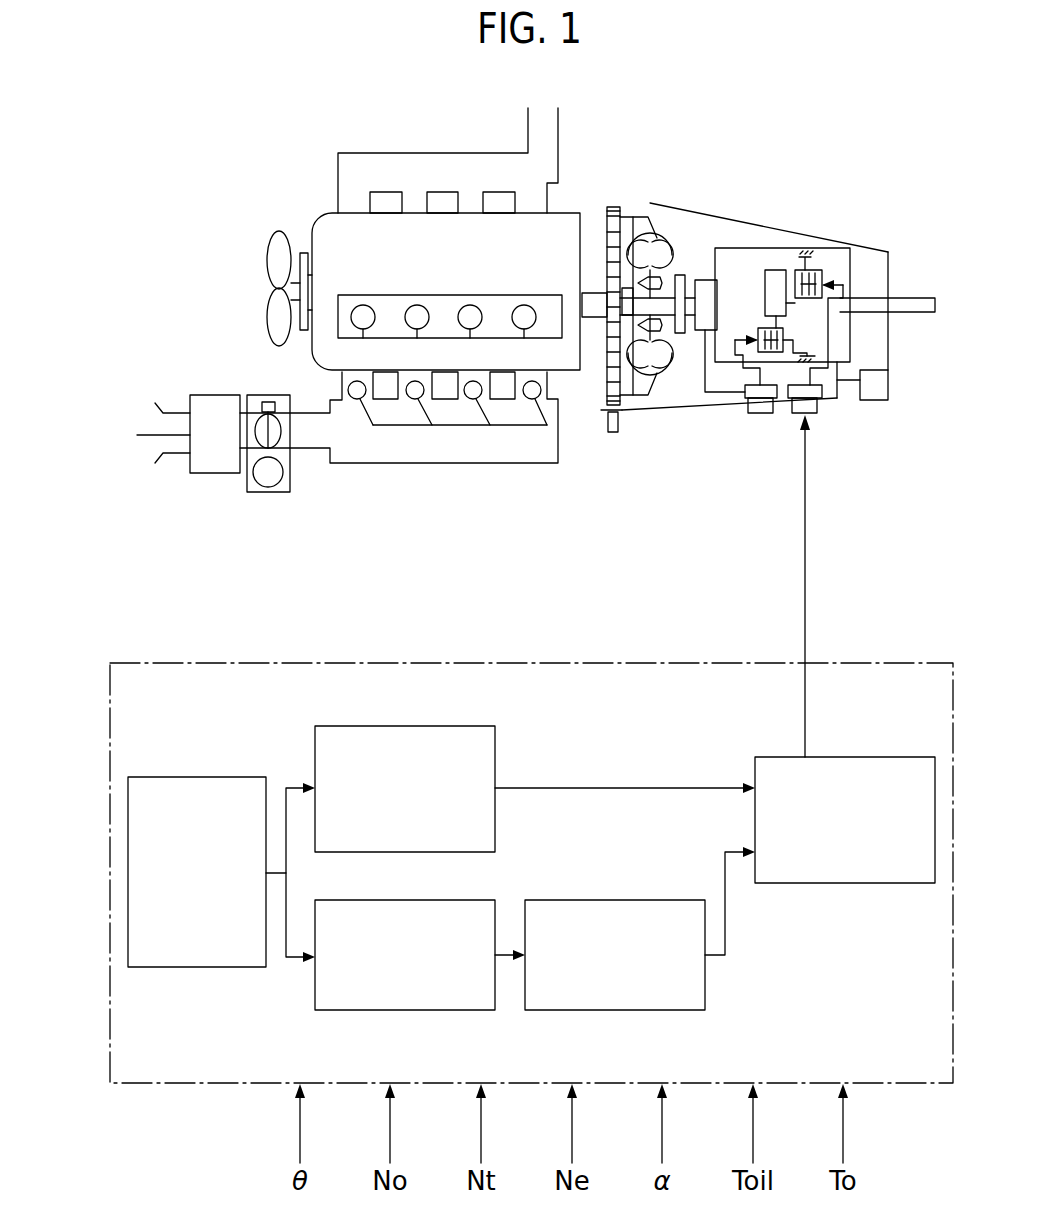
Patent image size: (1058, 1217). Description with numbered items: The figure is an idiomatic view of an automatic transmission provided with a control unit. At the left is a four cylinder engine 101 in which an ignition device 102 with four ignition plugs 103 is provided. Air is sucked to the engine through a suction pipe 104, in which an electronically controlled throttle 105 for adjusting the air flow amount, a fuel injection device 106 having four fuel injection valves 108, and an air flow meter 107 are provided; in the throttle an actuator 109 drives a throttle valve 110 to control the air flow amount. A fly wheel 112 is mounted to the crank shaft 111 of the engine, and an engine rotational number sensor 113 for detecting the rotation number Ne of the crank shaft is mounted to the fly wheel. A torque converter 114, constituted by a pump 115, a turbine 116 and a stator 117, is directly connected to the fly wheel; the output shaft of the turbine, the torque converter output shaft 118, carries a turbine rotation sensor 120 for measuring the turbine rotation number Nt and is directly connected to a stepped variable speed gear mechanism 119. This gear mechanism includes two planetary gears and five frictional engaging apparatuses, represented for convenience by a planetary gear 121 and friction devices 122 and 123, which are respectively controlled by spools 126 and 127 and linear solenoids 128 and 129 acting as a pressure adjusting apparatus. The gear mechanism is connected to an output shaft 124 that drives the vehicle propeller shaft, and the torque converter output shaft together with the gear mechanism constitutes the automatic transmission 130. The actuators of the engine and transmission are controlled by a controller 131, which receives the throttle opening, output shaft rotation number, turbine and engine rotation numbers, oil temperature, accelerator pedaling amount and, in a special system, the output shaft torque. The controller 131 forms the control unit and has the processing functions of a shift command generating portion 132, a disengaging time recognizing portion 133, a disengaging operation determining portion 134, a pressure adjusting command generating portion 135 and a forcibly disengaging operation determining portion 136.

The engine 101 is at (330, 216).
The ignition device 102 is at (452, 338).
The ignition plugs 103 is at (363, 305).
The suction pipe 104 is at (400, 458).
The electronically controlled throttle 105 is at (265, 395).
The fuel injection device 106 is at (468, 427).
The air flow meter 107 is at (207, 395).
The fuel injection valves 108 is at (541, 390).
The actuator 109 is at (258, 488).
The throttle valve 110 is at (283, 432).
The crank shaft 111 is at (596, 292).
The fly wheel 112 is at (612, 207).
The engine rotational number sensor 113 is at (613, 432).
The torque converter 114 is at (662, 235).
The pump 115 is at (675, 372).
The turbine 116 is at (641, 386).
The stator 117 is at (658, 375).
The torque converter output shaft 118 is at (678, 275).
The stepped variable speed gear mechanism 119 is at (753, 258).
The turbine rotation sensor 120 is at (697, 280).
The planetary gear 121 is at (778, 270).
The friction device 122 is at (818, 270).
The friction device 123 is at (793, 330).
The output shaft 124 is at (915, 298).
The spool 126 is at (760, 413).
The spool 127 is at (815, 398).
The linear solenoid 128 is at (767, 412).
The linear solenoid 129 is at (813, 418).
The automatic transmission 130 is at (878, 357).
The controller 131 is at (888, 663).
The shift command generating portion 132 is at (180, 967).
The disengaging time recognizing portion 133 is at (392, 1010).
The disengaging operation determining portion 134 is at (598, 1010).
The pressure adjusting command generating portion 135 is at (843, 883).
The forcibly disengaging operation determining portion 136 is at (395, 726).